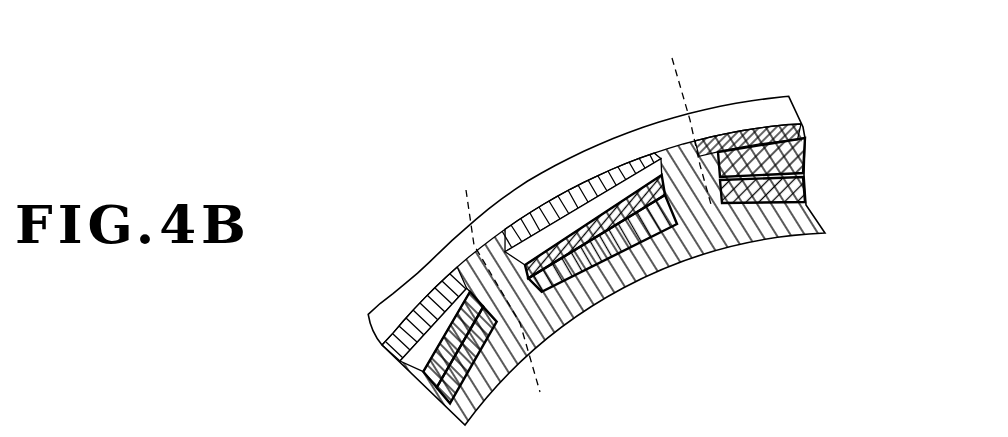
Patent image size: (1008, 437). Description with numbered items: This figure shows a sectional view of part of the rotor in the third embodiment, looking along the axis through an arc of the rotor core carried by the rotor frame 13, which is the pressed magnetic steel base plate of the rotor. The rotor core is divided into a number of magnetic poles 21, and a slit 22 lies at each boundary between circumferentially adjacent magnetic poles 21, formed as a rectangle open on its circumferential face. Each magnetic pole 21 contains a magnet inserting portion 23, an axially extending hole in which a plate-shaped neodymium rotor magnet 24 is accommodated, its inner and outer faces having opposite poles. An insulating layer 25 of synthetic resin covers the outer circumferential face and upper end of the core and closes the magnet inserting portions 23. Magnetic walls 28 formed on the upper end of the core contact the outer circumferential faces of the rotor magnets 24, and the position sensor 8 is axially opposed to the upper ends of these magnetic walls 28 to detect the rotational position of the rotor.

The position sensor 8 is at (598, 228).
The rotor frame 13 is at (374, 298).
The magnetic pole 21 is at (527, 352).
The slit 22 is at (579, 208).
The magnet inserting portion 23 is at (808, 188).
The rotor magnet 24 is at (427, 287).
The insulating layer 25 is at (774, 130).
The magnetic wall 28 is at (630, 183).